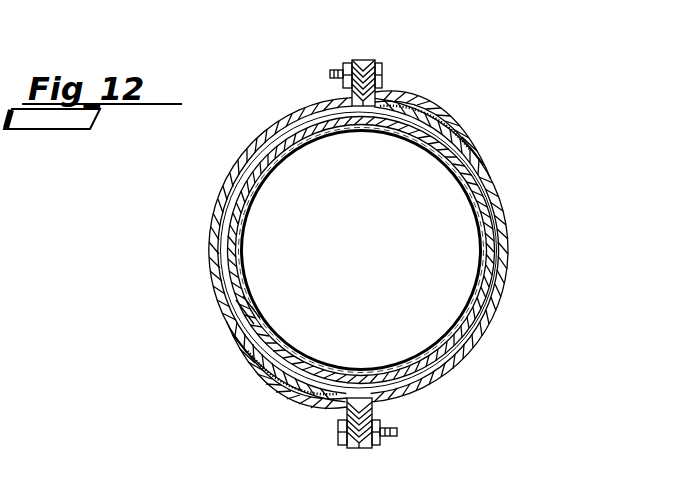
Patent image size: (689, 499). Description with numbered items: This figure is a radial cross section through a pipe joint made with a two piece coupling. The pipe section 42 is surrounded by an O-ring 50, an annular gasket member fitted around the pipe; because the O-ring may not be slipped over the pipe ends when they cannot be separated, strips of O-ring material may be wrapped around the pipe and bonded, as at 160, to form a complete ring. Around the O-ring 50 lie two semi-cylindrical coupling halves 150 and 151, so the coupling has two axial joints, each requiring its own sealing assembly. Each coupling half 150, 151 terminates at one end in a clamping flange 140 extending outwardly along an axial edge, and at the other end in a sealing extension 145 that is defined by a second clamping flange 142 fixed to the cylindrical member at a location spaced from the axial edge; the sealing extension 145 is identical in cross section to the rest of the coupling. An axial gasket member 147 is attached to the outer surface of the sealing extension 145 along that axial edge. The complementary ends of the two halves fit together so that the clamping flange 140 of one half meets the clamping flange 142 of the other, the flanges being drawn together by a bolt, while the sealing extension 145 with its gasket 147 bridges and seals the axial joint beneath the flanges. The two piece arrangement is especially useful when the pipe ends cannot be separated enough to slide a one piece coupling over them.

The clamping flange 140 is at (366, 60).
The clamping flange 142 is at (345, 70).
The sealing extension 145 is at (378, 106).
The axial gasket member 147 is at (433, 110).
The semi-cylindrical coupling half 150 is at (483, 163).
The semi-cylindrical coupling half 151 is at (246, 169).
The bond 160 is at (257, 160).
The pipe section 42 is at (315, 132).
The O-ring 50 is at (228, 258).